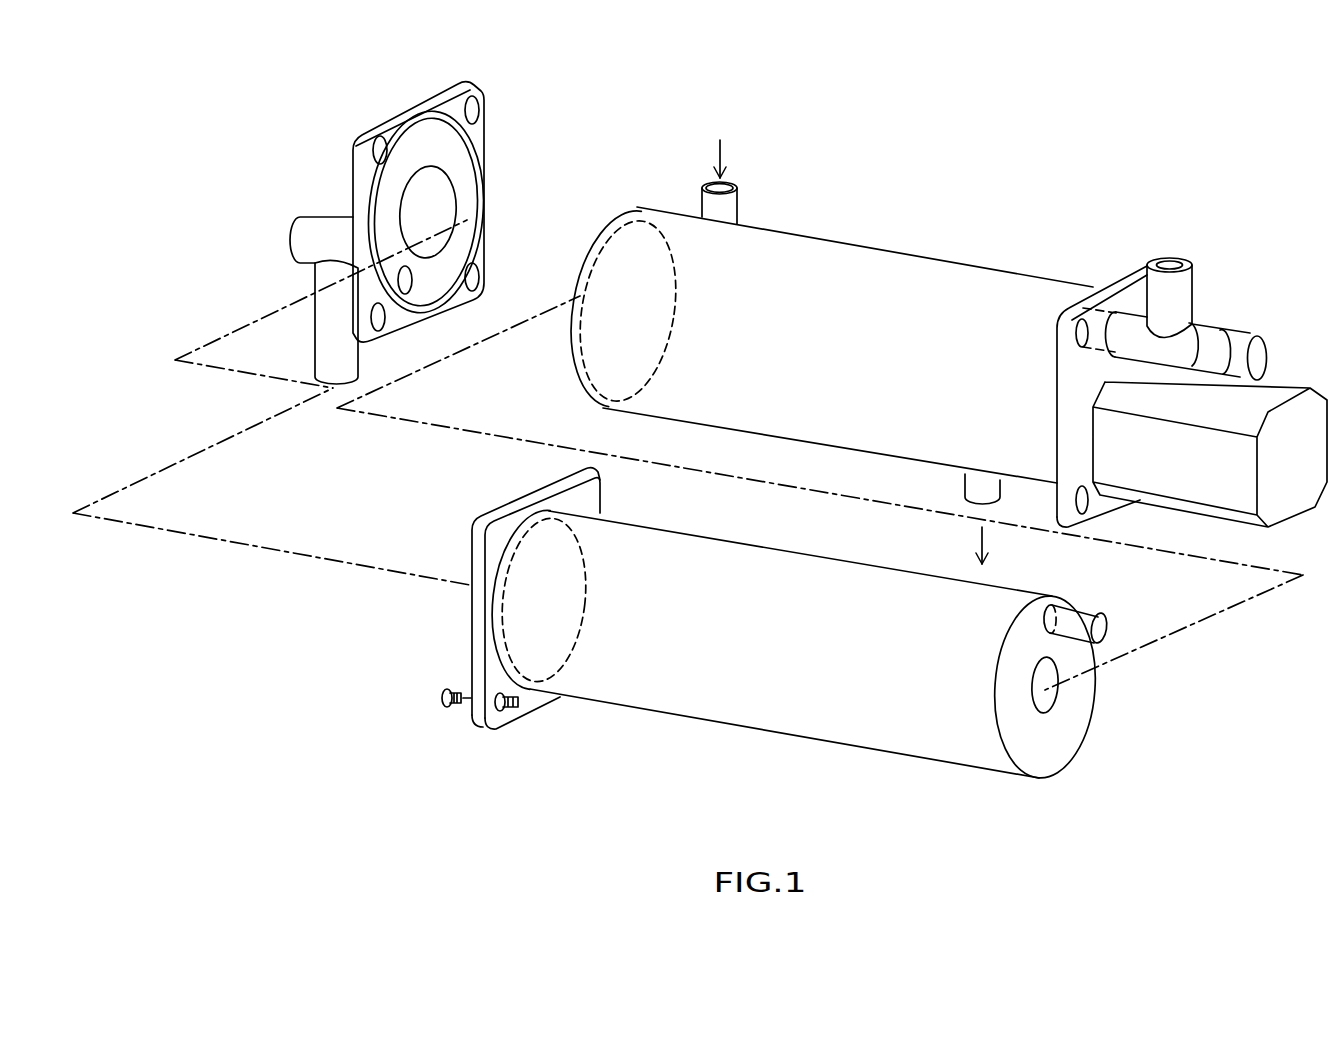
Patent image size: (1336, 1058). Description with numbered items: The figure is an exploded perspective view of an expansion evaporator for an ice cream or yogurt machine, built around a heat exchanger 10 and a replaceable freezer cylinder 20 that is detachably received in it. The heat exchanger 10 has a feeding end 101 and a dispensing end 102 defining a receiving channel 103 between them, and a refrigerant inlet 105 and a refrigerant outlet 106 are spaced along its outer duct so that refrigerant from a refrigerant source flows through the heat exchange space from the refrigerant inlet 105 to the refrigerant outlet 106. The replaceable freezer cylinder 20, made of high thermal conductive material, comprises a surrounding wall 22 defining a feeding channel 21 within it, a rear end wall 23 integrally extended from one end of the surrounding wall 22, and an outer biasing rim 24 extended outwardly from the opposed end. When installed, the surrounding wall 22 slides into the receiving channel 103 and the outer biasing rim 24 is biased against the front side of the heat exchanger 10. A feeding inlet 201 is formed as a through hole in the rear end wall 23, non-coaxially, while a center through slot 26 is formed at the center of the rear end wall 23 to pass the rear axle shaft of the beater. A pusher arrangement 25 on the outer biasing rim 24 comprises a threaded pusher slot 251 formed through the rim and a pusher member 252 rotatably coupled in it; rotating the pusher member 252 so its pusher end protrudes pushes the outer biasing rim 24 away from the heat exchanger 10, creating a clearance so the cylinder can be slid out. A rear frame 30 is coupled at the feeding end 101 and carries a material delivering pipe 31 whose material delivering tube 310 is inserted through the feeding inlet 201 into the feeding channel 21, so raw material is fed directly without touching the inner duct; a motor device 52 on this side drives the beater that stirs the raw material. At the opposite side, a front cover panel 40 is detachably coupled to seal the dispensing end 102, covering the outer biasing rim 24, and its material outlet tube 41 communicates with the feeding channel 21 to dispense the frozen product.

The heat exchanger 10 is at (805, 338).
The feeding end 101 is at (1100, 270).
The dispensing end 102 is at (612, 272).
The receiving channel 103 is at (585, 345).
The refrigerant inlet 105 is at (735, 212).
The refrigerant outlet 106 is at (972, 492).
The replaceable freezer cylinder 20 is at (761, 667).
The feeding channel 21 is at (506, 625).
The surrounding wall 22 is at (914, 680).
The rear end wall 23 is at (1023, 738).
The outer biasing rim 24 is at (468, 599).
The pusher arrangement 25 is at (501, 778).
The threaded pusher slot 251 is at (513, 710).
The pusher member 252 is at (448, 710).
The center through slot 26 is at (1062, 706).
The feeding inlet 201 is at (1063, 623).
The rear frame 30 is at (1213, 394).
The material delivering pipe 31 is at (1178, 290).
The material delivering tube 310 is at (1104, 616).
The motor device 52 is at (1226, 413).
The front cover panel 40 is at (352, 217).
The material outlet tube 41 is at (328, 346).